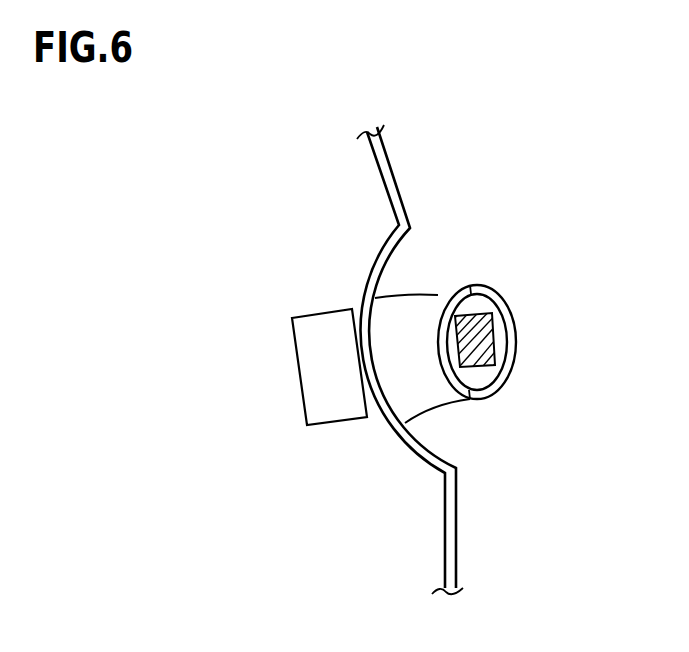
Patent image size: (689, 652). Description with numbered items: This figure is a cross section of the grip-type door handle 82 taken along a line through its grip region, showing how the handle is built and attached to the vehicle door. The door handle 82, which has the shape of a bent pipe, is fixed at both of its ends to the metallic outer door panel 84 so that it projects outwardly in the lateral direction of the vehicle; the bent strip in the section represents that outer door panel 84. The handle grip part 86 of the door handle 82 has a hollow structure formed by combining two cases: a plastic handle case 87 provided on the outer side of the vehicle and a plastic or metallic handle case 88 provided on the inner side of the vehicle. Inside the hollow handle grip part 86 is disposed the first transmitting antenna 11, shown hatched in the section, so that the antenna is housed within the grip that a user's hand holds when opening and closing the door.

The first transmitting antenna 11 is at (481, 361).
The door handle 82 is at (438, 291).
The outer door panel 84 is at (457, 524).
The handle grip part 86 is at (512, 305).
The handle case 87 is at (516, 350).
The handle case 88 is at (438, 351).